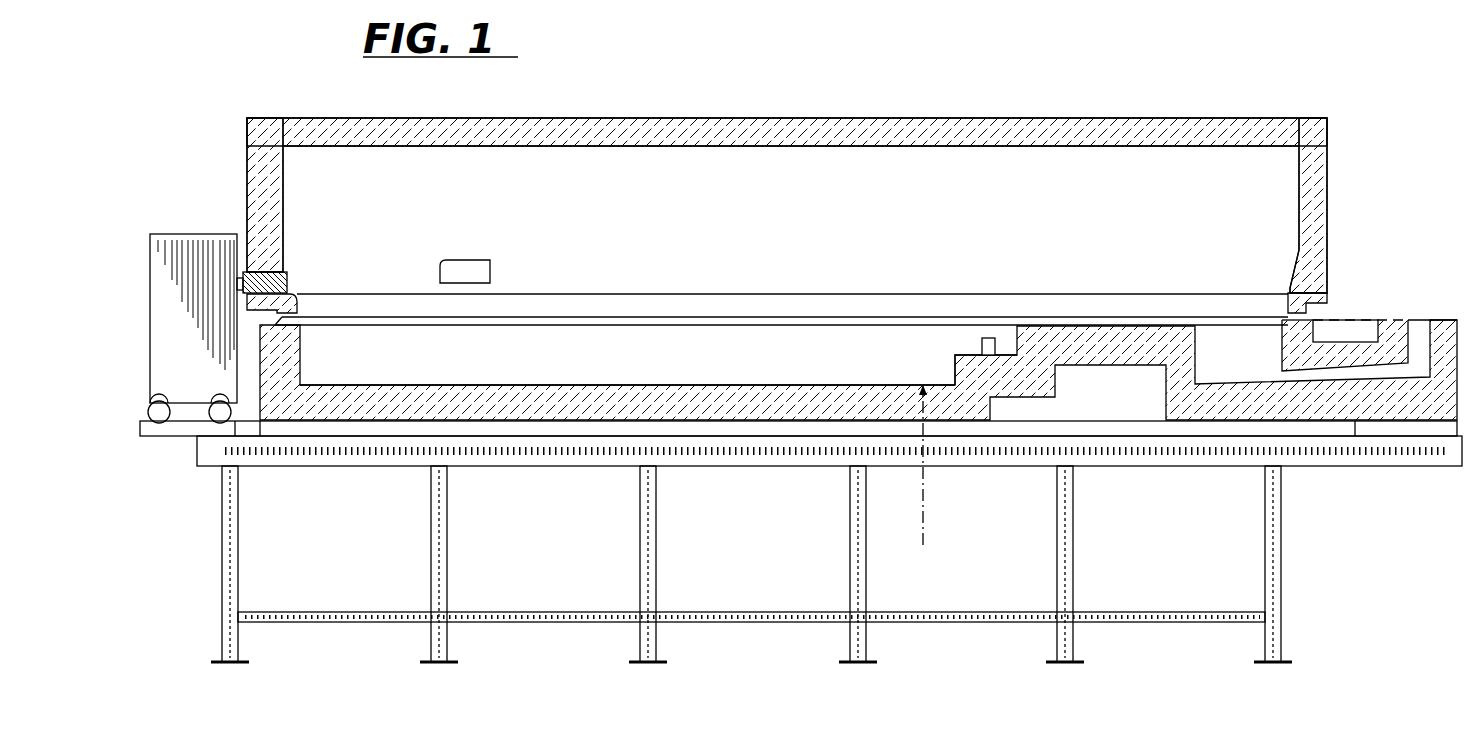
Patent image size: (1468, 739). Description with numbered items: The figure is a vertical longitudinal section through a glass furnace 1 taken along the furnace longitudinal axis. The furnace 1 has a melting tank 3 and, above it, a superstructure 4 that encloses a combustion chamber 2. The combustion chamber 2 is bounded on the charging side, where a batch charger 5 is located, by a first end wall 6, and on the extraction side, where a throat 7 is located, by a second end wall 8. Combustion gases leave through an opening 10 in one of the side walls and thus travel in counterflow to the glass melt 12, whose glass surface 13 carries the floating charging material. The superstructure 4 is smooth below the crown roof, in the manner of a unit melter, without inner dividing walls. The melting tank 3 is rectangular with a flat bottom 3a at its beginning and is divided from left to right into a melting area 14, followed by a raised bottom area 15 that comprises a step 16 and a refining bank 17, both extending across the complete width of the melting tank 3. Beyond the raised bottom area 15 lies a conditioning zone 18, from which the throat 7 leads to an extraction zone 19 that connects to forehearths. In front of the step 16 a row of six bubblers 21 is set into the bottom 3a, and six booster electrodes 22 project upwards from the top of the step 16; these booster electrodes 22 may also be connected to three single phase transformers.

The furnace 1 is at (952, 80).
The combustion chamber 2 is at (865, 270).
The melting tank 3 is at (727, 400).
The flat bottom 3a is at (634, 380).
The superstructure 4 is at (740, 128).
The batch charger 5 is at (196, 330).
The first end wall 6 is at (265, 190).
The throat 7 is at (1348, 352).
The second end wall 8 is at (1320, 190).
The opening 10 is at (473, 273).
The glass melt 12 is at (664, 322).
The glass surface 13 is at (766, 320).
The melting area 14 is at (592, 368).
The raised bottom area 15 is at (1195, 235).
The step 16 is at (952, 360).
The refining bank 17 is at (1104, 323).
The conditioning zone 18 is at (1256, 363).
The extraction zone 19 is at (1418, 342).
The bubblers 21 is at (950, 512).
The booster electrodes 22 is at (987, 335).